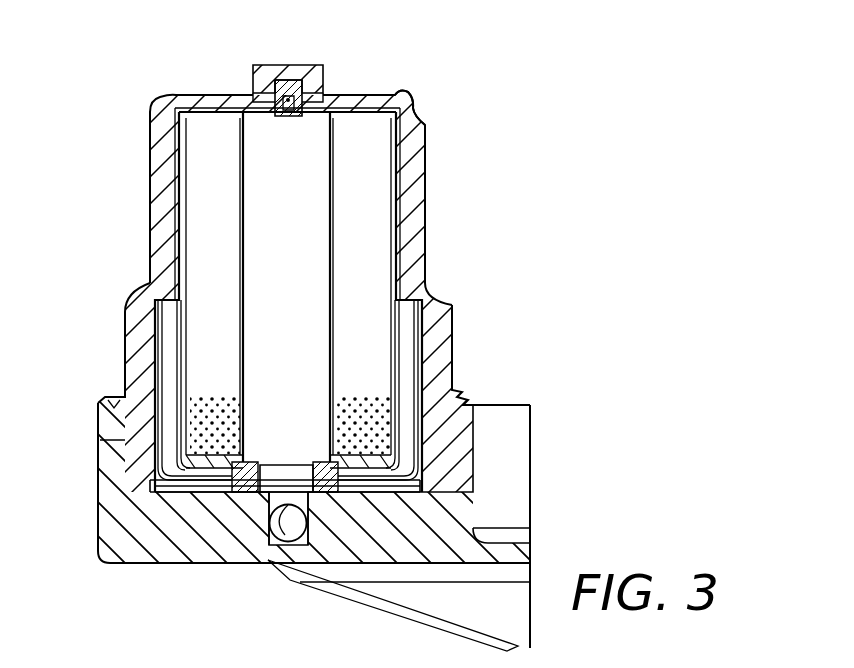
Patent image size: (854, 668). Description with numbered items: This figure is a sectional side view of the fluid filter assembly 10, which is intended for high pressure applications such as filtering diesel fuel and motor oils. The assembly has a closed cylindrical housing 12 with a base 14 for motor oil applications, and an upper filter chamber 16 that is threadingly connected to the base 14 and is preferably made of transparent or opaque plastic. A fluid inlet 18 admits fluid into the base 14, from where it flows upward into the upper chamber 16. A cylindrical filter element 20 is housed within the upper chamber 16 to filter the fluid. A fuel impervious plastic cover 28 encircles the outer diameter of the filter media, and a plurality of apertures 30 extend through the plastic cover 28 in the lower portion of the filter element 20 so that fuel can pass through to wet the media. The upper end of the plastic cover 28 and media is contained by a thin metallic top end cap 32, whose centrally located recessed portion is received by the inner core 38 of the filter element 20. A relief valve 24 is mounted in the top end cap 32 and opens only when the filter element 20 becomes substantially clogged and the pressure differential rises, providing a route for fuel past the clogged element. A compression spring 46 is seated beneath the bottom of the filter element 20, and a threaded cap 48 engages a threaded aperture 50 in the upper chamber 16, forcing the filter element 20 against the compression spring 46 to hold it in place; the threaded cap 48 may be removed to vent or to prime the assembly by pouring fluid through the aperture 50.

The fluid filter assembly 10 is at (540, 228).
The housing 12 is at (456, 304).
The base 14 is at (166, 564).
The upper filter chamber 16 is at (128, 319).
The fluid inlet 18 is at (282, 548).
The filter element 20 is at (402, 195).
The relief valve 24 is at (290, 120).
The plastic cover 28 is at (376, 155).
The apertures 30 is at (205, 395).
The top end cap 32 is at (404, 95).
The inner core 38 is at (286, 287).
The compression spring 46 is at (373, 482).
The threaded cap 48 is at (300, 62).
The threaded aperture 50 is at (262, 64).